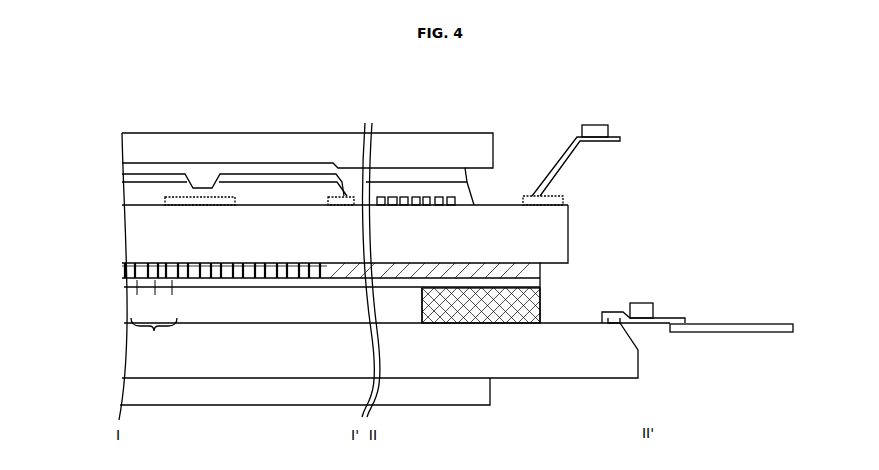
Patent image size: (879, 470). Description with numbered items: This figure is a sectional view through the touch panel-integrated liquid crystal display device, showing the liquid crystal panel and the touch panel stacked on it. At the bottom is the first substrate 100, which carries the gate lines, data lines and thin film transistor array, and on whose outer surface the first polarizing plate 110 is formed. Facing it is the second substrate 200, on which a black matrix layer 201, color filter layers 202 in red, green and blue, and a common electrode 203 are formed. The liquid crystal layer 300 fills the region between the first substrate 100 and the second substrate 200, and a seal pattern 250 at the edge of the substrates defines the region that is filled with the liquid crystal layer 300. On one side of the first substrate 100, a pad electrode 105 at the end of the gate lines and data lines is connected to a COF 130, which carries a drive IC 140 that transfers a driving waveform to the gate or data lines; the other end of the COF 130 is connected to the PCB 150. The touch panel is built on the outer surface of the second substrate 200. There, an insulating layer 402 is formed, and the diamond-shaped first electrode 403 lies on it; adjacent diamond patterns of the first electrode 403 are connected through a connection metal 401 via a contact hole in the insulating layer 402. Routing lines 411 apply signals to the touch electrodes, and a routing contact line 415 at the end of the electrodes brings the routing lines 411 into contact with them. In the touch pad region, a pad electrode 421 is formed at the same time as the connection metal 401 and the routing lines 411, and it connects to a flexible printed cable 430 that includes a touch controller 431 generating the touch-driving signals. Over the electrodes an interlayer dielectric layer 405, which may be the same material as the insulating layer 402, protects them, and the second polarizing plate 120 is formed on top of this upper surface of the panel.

The first substrate 100 is at (550, 379).
The pad electrode 105 is at (617, 324).
The first polarizing plate 110 is at (265, 407).
The second polarizing plate 120 is at (197, 128).
The COF 130 is at (668, 312).
The drive IC 140 is at (641, 302).
The PCB 150 is at (731, 323).
The second substrate 200 is at (568, 232).
The black matrix layer 201 is at (148, 265).
The color filter layers 202 is at (153, 317).
The common electrode 203 is at (128, 287).
The seal pattern 250 is at (536, 300).
The liquid crystal layer 300 is at (249, 318).
The connection metal 401 is at (203, 207).
The insulating layer 402 is at (121, 201).
The first electrode 403 is at (121, 178).
The interlayer dielectric layer 405 is at (121, 166).
The routing lines 411 is at (402, 207).
The routing contact line 415 is at (340, 207).
The pad electrode 421 is at (565, 197).
The flexible printed cable 430 is at (562, 158).
The touch controller 431 is at (594, 123).